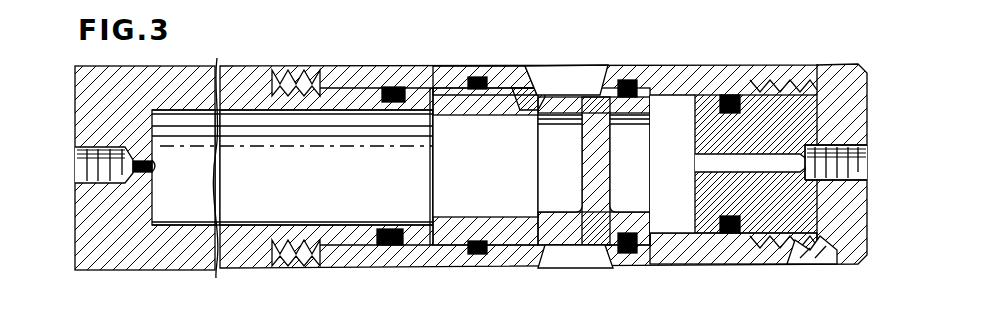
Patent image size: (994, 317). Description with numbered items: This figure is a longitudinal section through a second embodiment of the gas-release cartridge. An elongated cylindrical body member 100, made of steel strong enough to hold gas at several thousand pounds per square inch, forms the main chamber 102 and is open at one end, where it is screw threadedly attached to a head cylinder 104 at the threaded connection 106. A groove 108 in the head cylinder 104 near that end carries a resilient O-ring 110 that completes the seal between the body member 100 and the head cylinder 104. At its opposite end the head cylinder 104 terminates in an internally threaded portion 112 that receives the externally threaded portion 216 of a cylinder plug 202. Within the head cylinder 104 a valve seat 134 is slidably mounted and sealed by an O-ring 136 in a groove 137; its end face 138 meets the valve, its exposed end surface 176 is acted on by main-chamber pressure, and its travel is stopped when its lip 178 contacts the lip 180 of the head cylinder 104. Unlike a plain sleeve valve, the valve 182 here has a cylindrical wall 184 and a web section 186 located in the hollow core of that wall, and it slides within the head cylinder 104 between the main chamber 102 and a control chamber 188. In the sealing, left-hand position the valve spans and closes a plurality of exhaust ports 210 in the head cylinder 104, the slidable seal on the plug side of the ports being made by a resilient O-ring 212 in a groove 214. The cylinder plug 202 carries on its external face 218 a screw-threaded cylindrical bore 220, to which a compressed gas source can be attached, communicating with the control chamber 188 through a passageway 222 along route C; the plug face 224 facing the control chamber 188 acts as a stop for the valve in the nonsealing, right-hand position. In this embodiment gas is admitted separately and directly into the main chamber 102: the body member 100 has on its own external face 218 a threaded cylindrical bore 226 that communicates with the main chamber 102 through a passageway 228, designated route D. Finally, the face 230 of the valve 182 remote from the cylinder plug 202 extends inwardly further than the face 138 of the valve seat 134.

The cylindrical body member 100 is at (243, 66).
The main chamber 102 is at (154, 141).
The head cylinder 104 is at (691, 54).
The screw threaded attachment 106 is at (306, 90).
The groove 108 is at (392, 231).
The O-ring 110 is at (372, 284).
The internally threaded portion 112 is at (787, 243).
The valve seat 134 is at (432, 268).
The O-ring 136 is at (478, 78).
The groove 137 is at (466, 86).
The end face of valve seat 138 is at (525, 77).
The exposed end surface of valve seat 176 is at (424, 112).
The lip of valve seat 178 is at (498, 268).
The lip of head cylinder 180 is at (512, 233).
The valve 182 is at (587, 100).
The cylindrical wall 184 is at (565, 230).
The web section 186 is at (594, 165).
The control chamber 188 is at (663, 118).
The cylinder plug 202 is at (869, 44).
The exhaust ports 210 is at (568, 72).
The O-ring 212 is at (633, 97).
The groove 214 is at (628, 255).
The externally threaded portion 216 is at (732, 246).
The external face 218 is at (76, 108).
The cylindrical bore 220 is at (867, 148).
The passageway 222 is at (692, 160).
The face of cylinder plug 224 is at (695, 127).
The cylindrical bore 226 is at (76, 172).
The passageway 228 is at (163, 176).
The face of valve 230 is at (553, 237).